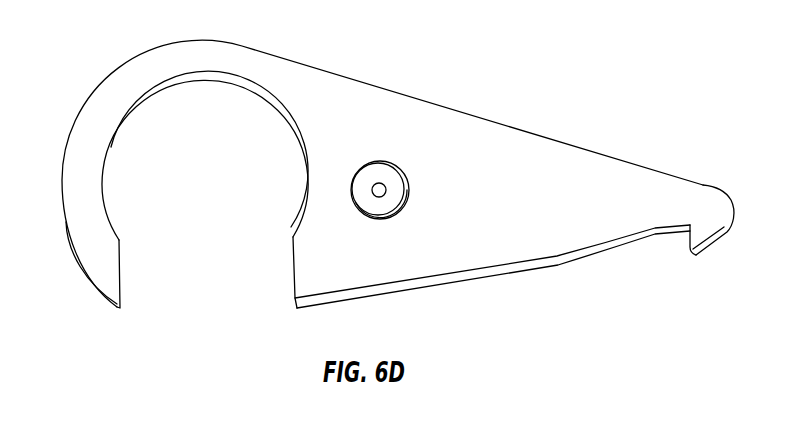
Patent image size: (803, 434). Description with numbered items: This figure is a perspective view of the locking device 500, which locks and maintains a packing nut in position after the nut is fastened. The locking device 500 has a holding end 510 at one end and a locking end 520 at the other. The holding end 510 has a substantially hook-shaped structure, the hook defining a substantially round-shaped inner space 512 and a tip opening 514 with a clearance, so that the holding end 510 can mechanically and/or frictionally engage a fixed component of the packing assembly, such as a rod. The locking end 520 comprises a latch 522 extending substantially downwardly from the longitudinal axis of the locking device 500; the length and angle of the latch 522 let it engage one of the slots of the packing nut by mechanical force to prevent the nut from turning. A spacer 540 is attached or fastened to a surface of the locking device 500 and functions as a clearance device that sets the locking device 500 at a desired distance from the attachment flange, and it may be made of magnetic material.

The locking device 500 is at (388, 192).
The holding end 510 is at (105, 82).
The inner space 512 is at (222, 197).
The tip opening 514 is at (210, 300).
The locking end 520 is at (687, 182).
The latch 522 is at (693, 257).
The spacer 540 is at (392, 192).